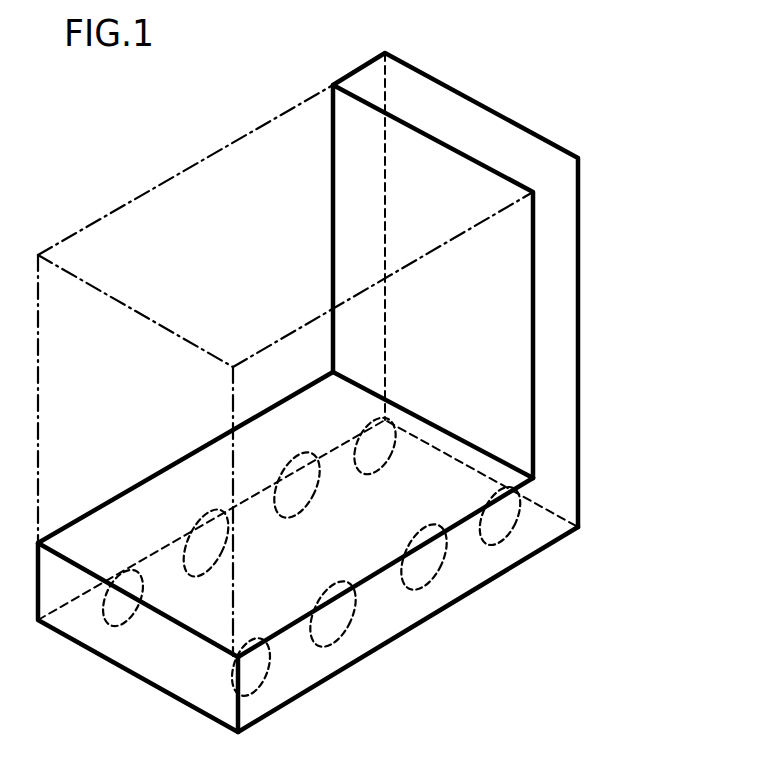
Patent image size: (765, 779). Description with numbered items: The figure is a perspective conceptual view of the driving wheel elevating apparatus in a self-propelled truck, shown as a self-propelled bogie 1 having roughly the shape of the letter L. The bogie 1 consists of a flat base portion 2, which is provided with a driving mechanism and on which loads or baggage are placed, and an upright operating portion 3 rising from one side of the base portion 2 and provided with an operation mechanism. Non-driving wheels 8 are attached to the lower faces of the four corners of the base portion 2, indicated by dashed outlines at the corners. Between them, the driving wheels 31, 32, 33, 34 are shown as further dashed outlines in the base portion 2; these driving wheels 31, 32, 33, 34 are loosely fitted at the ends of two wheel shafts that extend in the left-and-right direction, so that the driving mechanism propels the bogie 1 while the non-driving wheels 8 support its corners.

The self-propelled bogie 1 is at (342, 383).
The base portion 2 is at (303, 505).
The operating portion 3 is at (473, 115).
The non-driving wheels 8 is at (110, 620).
The driving wheel 31 is at (345, 633).
The driving wheel 32 is at (192, 523).
The driving wheel 33 is at (442, 572).
The driving wheel 34 is at (293, 452).